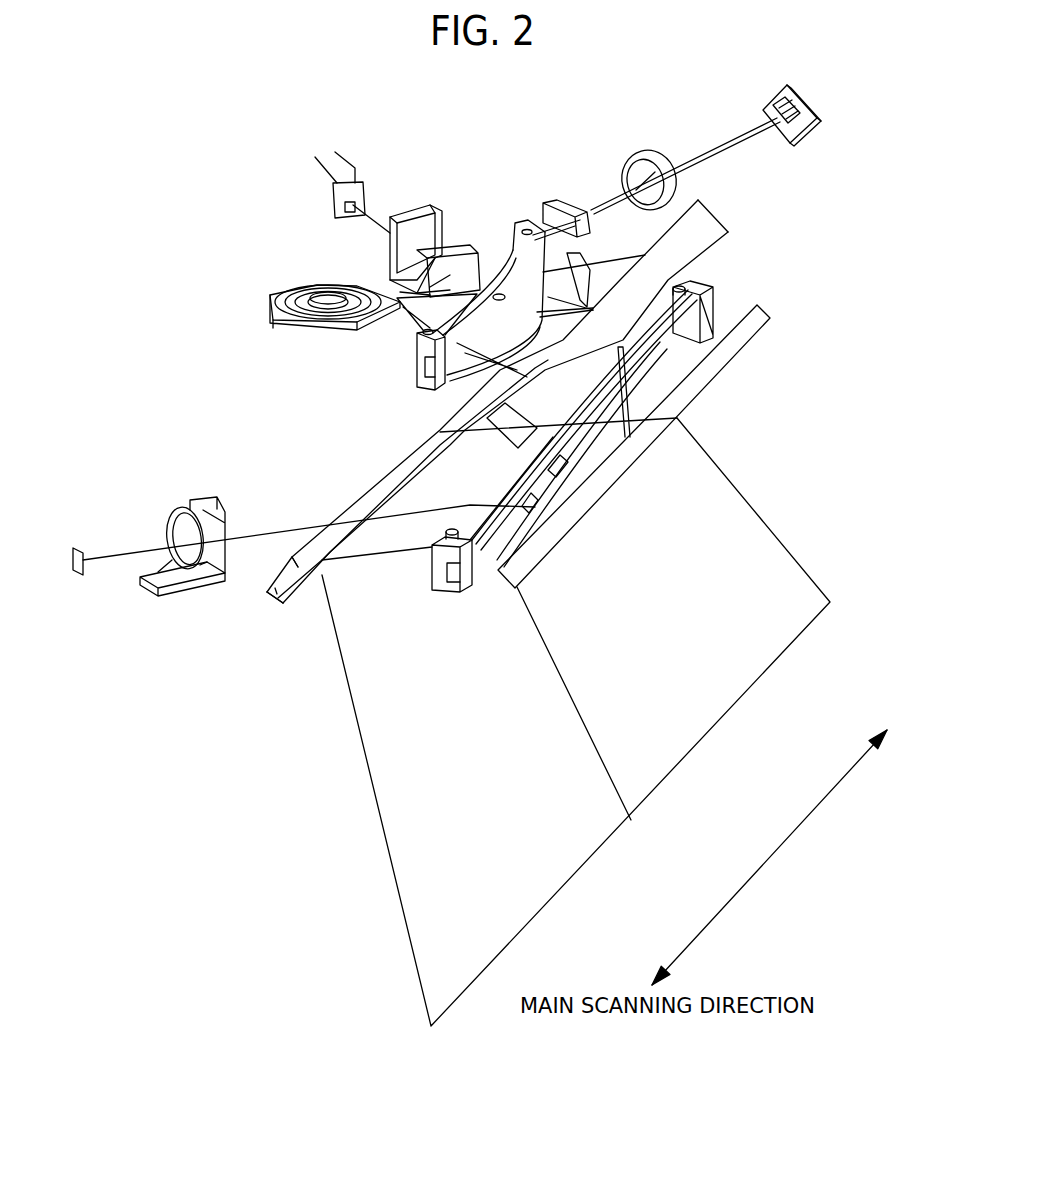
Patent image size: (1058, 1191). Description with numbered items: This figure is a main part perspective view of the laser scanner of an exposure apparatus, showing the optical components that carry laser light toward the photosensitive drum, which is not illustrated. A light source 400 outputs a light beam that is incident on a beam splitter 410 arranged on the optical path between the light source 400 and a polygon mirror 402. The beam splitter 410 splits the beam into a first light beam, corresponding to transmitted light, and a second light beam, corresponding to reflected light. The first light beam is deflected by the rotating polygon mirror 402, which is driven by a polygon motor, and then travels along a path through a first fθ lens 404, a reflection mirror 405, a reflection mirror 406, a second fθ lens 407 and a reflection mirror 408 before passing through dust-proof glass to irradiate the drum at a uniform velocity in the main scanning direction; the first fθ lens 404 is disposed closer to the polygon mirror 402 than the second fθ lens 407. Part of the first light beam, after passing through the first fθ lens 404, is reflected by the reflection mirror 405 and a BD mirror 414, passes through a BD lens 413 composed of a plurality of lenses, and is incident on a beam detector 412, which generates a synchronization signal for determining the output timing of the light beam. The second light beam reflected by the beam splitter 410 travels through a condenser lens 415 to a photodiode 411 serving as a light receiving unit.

The light source 400 is at (808, 126).
The polygon mirror 402 is at (270, 308).
The first fθ lens 404 is at (517, 265).
The reflection mirror 405 is at (707, 243).
The reflection mirror 406 is at (713, 367).
The second fθ lens 407 is at (463, 512).
The reflection mirror 408 is at (277, 595).
The beam splitter 410 is at (467, 260).
The photodiode 411 is at (332, 205).
The beam detector 412 is at (75, 570).
The BD lens 413 is at (182, 528).
The BD mirror 414 is at (535, 507).
The condenser lens 415 is at (402, 217).